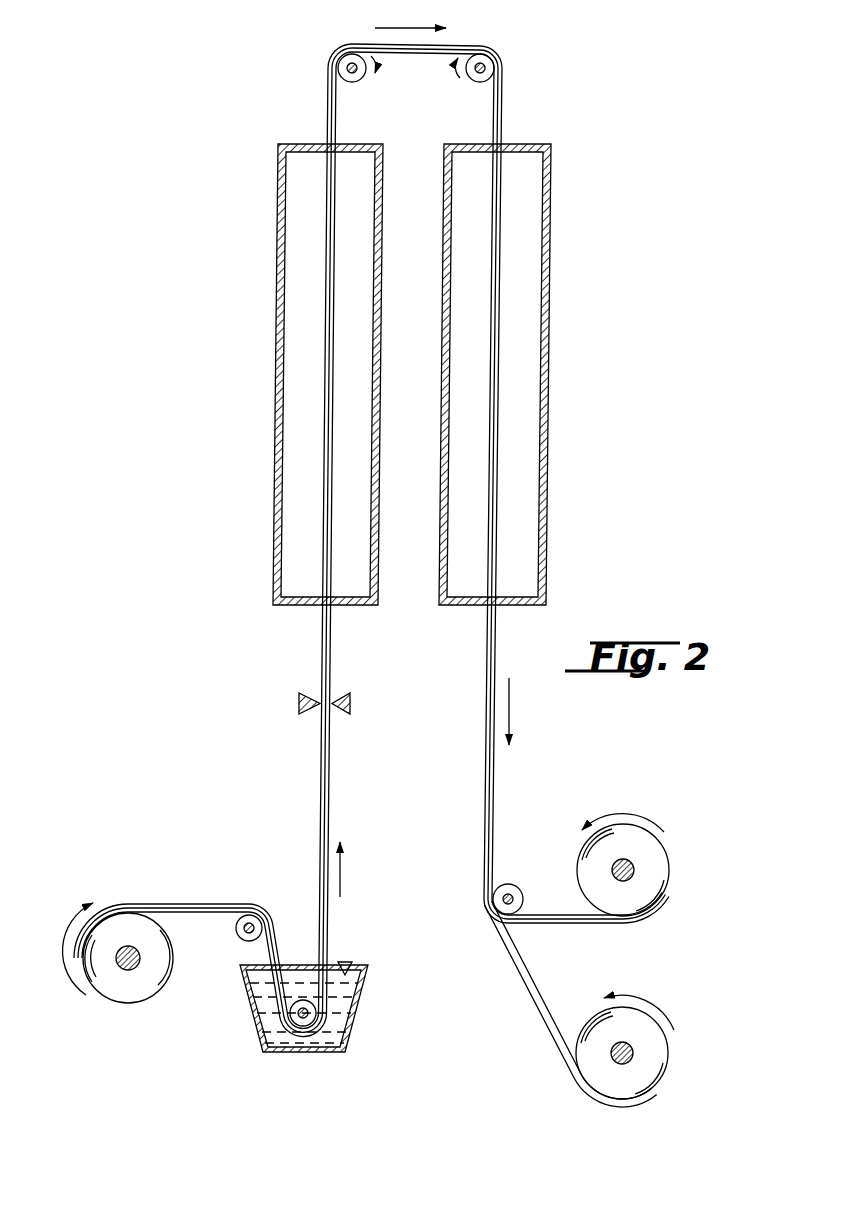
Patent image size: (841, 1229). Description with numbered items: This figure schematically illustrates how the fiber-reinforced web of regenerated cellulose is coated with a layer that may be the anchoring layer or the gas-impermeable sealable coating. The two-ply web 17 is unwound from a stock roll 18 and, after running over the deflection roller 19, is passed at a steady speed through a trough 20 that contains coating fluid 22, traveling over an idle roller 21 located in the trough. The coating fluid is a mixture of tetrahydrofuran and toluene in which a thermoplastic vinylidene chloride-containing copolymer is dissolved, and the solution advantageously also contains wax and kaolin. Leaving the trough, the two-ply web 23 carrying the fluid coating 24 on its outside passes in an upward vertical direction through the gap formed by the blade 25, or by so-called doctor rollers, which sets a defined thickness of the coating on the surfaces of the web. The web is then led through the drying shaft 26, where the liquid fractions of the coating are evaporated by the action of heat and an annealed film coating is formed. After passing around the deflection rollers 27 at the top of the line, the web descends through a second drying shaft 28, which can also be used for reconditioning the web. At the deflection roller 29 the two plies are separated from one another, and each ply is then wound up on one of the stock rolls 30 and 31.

The two-ply web 17 is at (184, 898).
The stock roll 18 is at (122, 993).
The deflection roller 19 is at (255, 914).
The trough 20 is at (252, 1018).
The idle roller 21 is at (300, 1024).
The coating fluid 22 is at (326, 1038).
The two-ply web having the fluid coating 23 is at (336, 806).
The fluid coating 24 is at (320, 769).
The blade 25 is at (341, 689).
The drying shaft 26 is at (288, 425).
The deflection rollers 27 is at (364, 79).
The second drying shaft 28 is at (530, 430).
The deflection roller 29 is at (516, 894).
The stock roll 30 is at (656, 848).
The stock roll 31 is at (655, 1056).